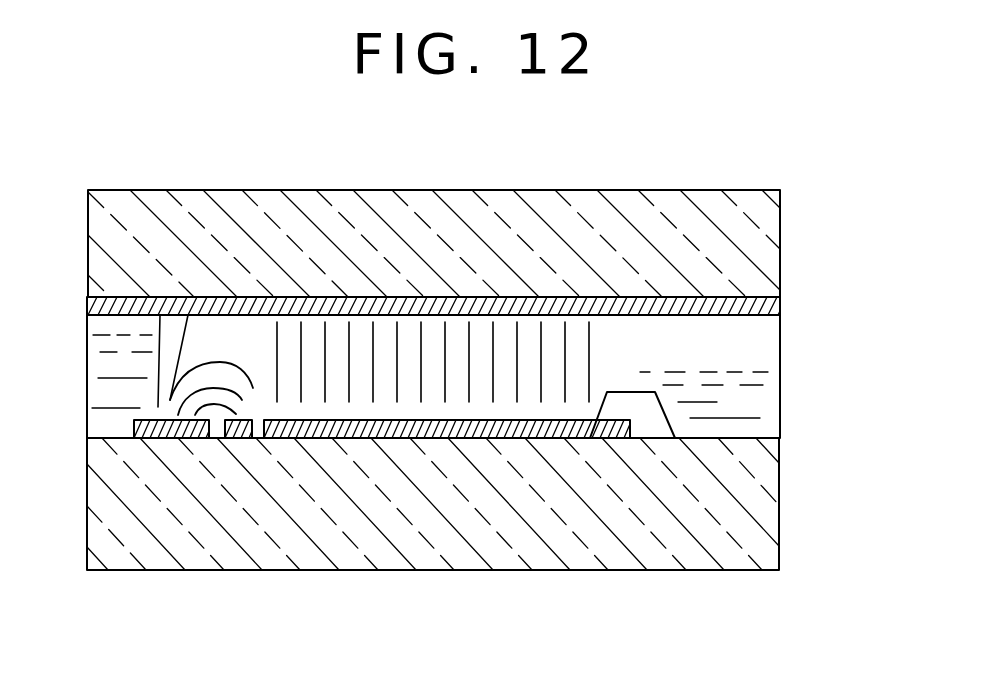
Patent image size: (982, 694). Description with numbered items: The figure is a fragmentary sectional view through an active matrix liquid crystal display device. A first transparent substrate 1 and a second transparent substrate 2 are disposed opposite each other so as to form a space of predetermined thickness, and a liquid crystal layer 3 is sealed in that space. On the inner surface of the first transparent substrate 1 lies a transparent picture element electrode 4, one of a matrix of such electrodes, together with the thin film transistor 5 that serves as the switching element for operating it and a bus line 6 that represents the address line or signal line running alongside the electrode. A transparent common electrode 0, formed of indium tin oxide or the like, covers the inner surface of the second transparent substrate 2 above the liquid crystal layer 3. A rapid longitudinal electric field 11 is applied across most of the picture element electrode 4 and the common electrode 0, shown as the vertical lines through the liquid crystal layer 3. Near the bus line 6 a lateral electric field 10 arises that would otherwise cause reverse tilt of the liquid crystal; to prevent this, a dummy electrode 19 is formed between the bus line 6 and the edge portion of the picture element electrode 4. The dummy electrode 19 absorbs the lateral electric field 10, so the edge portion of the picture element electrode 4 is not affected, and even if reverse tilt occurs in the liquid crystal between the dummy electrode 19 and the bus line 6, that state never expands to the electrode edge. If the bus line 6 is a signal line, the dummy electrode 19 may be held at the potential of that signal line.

The first transparent substrate 1 is at (762, 502).
The second transparent substrate 2 is at (753, 243).
The common electrode 0 is at (770, 305).
The liquid crystal layer 3 is at (753, 392).
The picture element electrode 4 is at (460, 438).
The thin film transistor 5 is at (653, 428).
The bus line 6 is at (170, 438).
The dummy electrode 19 is at (235, 438).
The lateral electric field 10 is at (223, 363).
The longitudinal electric field 11 is at (432, 355).